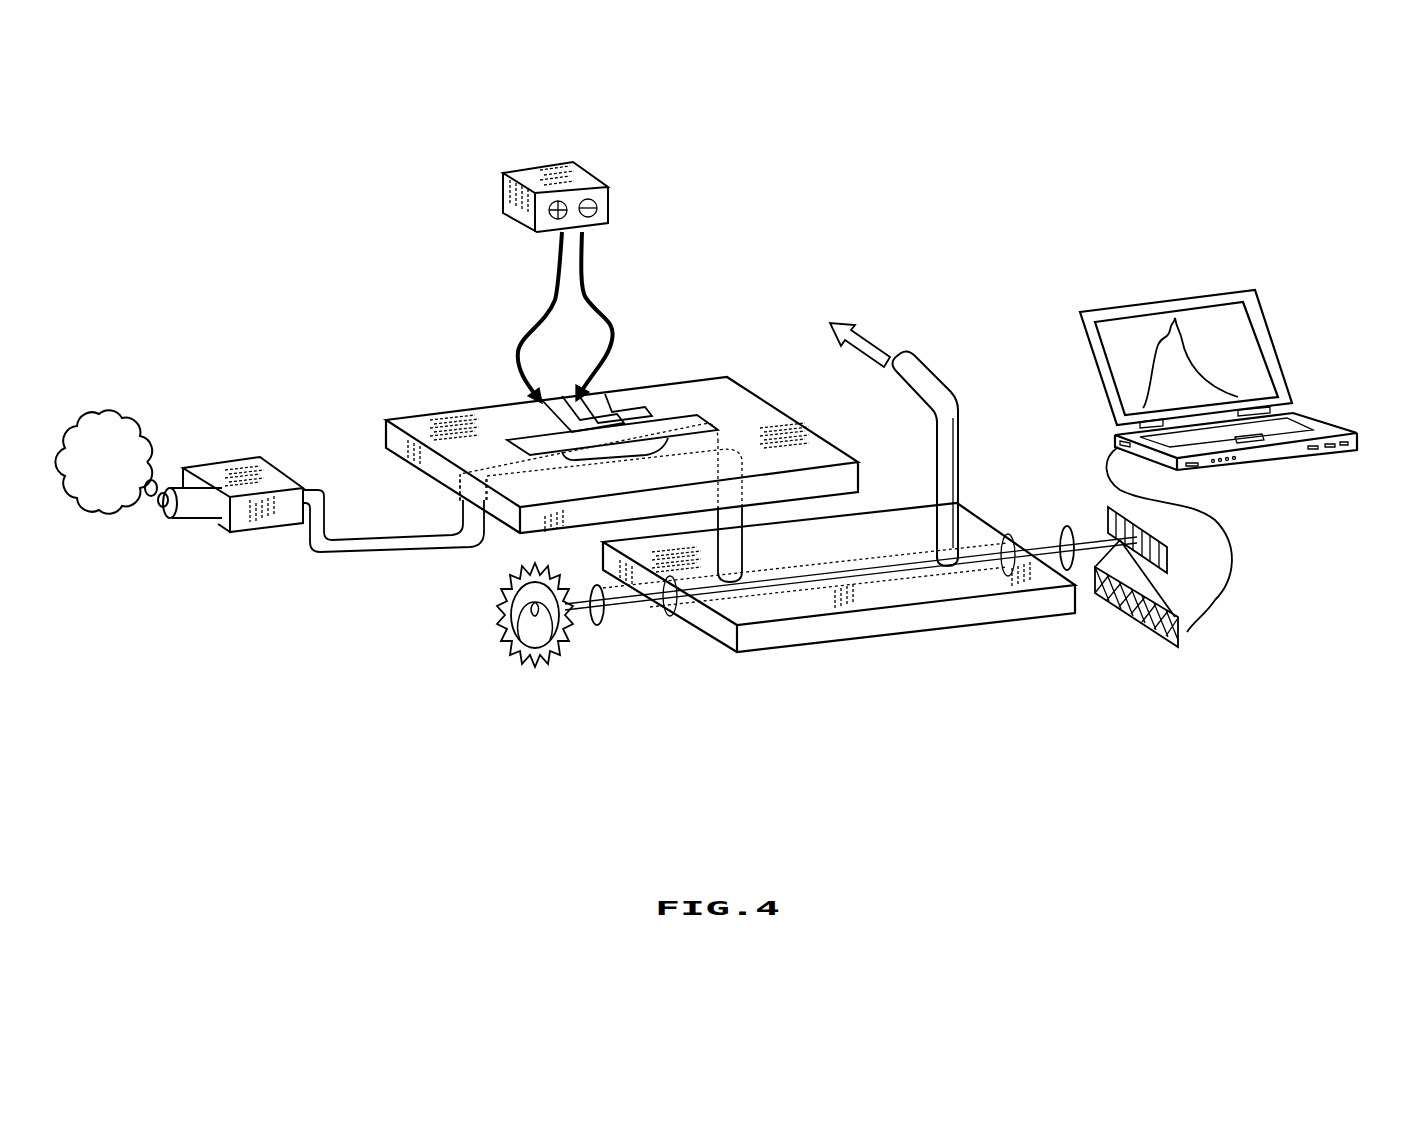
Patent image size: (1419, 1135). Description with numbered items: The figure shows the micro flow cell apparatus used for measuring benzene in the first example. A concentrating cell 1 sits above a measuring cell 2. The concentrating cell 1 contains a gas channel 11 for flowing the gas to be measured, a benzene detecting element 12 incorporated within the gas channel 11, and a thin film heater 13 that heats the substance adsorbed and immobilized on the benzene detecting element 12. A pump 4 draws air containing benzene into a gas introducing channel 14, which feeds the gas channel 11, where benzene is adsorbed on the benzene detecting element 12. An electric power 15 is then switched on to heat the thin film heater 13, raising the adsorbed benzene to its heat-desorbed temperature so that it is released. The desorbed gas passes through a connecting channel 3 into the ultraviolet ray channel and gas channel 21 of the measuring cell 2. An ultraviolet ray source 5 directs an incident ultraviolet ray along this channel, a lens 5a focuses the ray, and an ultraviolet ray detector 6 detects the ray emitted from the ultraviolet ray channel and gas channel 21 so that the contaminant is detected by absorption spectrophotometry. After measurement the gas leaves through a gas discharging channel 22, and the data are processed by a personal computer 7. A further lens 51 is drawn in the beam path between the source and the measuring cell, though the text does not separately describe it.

The concentrating cell 1 is at (386, 434).
The measuring cell 2 is at (942, 622).
The connecting channel 3 is at (737, 546).
The pump 4 is at (218, 516).
The ultraviolet ray source 5 is at (518, 633).
The lens 5a is at (1067, 530).
The ultraviolet ray detector 6 is at (1153, 623).
The personal computer 7 is at (1168, 303).
The gas channel 11 is at (728, 425).
The benzene detecting element 12 is at (637, 447).
The thin film heater 13 is at (545, 400).
The gas introducing channel 14 is at (340, 548).
The electric power 15 is at (577, 163).
The ultraviolet ray channel and gas channel 21 is at (742, 598).
The gas discharging channel 22 is at (917, 380).
The lens 51 is at (600, 623).